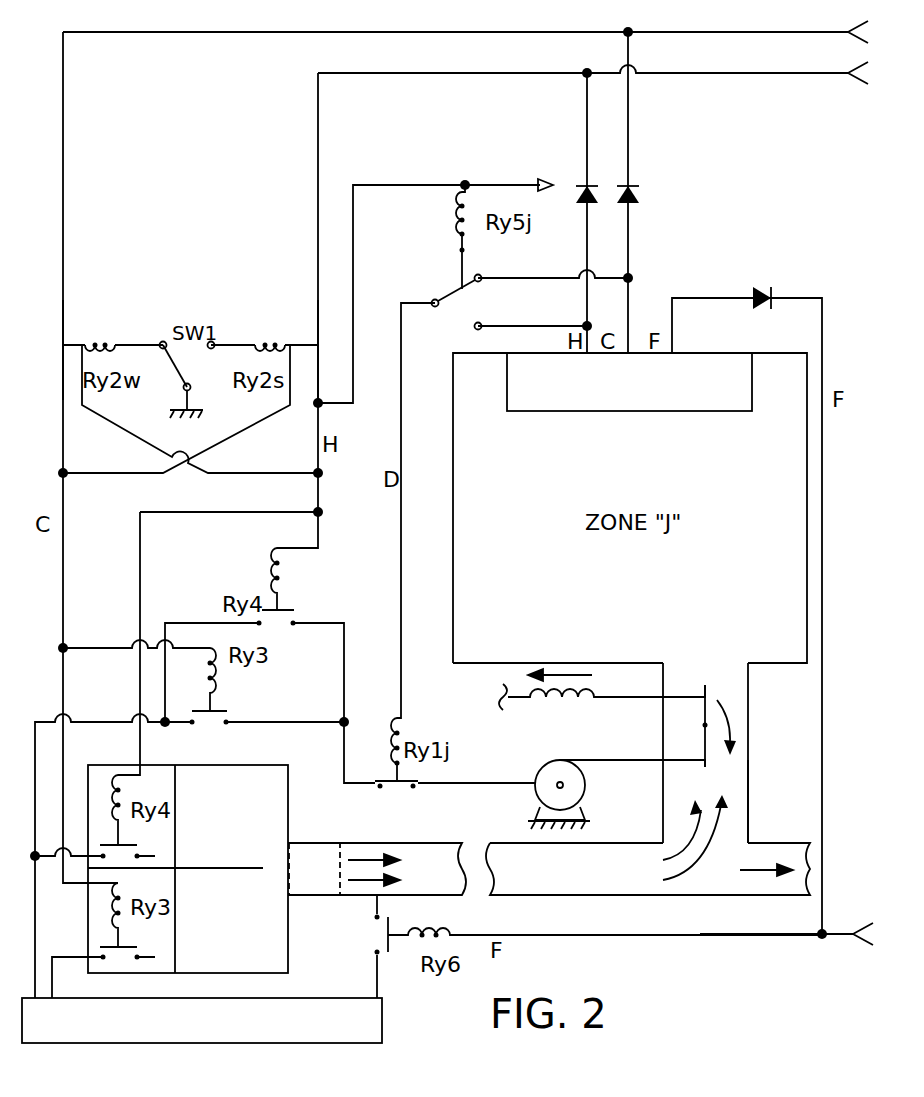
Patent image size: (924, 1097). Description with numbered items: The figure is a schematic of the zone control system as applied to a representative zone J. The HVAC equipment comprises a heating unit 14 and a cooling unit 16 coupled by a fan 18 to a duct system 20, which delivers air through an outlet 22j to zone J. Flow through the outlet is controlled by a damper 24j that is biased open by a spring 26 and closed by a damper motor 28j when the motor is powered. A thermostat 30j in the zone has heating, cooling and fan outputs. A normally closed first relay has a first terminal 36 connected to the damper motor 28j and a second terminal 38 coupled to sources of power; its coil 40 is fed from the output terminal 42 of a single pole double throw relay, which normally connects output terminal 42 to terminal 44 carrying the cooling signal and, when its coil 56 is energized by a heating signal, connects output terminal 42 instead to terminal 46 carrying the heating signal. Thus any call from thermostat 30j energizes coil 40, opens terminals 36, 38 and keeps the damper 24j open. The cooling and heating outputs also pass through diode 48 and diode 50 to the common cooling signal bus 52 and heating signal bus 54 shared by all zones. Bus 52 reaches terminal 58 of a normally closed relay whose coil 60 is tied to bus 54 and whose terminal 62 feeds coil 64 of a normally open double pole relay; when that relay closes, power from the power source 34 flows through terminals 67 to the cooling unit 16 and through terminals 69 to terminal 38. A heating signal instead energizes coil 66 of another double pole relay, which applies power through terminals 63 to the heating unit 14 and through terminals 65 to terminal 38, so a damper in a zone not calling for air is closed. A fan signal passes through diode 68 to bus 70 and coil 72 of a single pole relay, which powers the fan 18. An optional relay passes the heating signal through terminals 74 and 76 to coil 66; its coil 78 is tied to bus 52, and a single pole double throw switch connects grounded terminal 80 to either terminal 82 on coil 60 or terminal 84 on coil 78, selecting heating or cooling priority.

The heating unit 14 is at (284, 800).
The cooling unit 16 is at (288, 923).
The fan 18 is at (304, 855).
The duct system 20 is at (583, 888).
The outlet 22j is at (723, 784).
The damper 24j is at (708, 686).
The spring 26 is at (576, 700).
The damper motor 28j is at (540, 787).
The thermostat 30j is at (674, 403).
The power source 34 is at (282, 1041).
The first terminal of relay Ry1j 36 is at (413, 789).
The second terminal of relay Ry1j 38 is at (380, 790).
The coil of relay Ry1j 40 is at (395, 729).
The output terminal of relay Ry5j 42 is at (442, 297).
The terminal of relay Ry5j 44 is at (480, 276).
The terminal of relay Ry5j 46 is at (476, 329).
The diode 48 is at (637, 195).
The diode 50 is at (582, 193).
The cooling signal bus 52 is at (593, 32).
The heating signal bus 54 is at (475, 73).
The coil of relay Ry5j 56 is at (452, 235).
The terminal of relay Ry2w 58 is at (62, 328).
The coil of relay Ry2w 60 is at (92, 343).
The terminal of relay Ry2w 62 is at (63, 364).
The terminals of relay Ry4 63 is at (117, 859).
The coil of relay Ry3 64 is at (218, 678).
The terminals of relay Ry4 65 is at (285, 625).
The coil of relay Ry4 66 is at (269, 566).
The terminals of relay Ry3 67 is at (120, 960).
The diode 68 is at (752, 291).
The terminals of relay Ry3 69 is at (213, 728).
The fan signal bus 70 is at (737, 936).
The coil of relay Ry6 72 is at (432, 929).
The terminal of relay Ry2s 74 is at (317, 331).
The terminal of relay Ry2s 76 is at (320, 364).
The coil of relay Ry2s 78 is at (293, 345).
The grounded terminal 80 is at (183, 384).
The terminal 82 is at (161, 344).
The terminal 84 is at (213, 343).